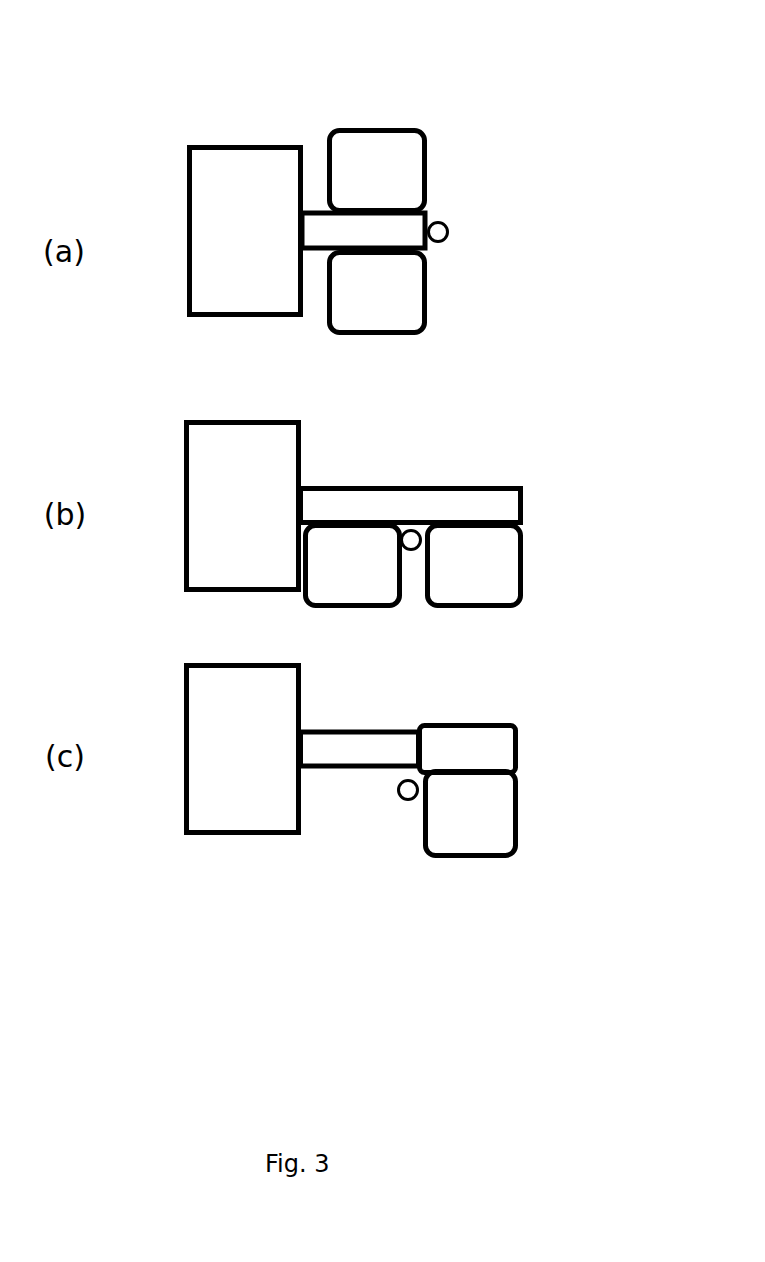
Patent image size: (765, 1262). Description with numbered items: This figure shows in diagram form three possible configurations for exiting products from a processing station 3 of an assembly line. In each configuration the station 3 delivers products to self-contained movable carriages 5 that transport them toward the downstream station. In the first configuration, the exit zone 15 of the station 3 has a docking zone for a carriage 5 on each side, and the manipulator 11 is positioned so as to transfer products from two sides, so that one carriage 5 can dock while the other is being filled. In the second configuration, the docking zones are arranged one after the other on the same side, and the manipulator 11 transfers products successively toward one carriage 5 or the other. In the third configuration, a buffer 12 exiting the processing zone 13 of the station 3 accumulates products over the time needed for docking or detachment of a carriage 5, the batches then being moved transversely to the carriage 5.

The station 3 is at (240, 105).
The carriage 5 is at (390, 160).
The manipulator 11 is at (400, 805).
The buffer 12 is at (492, 750).
The processing zone 13 is at (238, 797).
The exit zone 15 is at (409, 451).